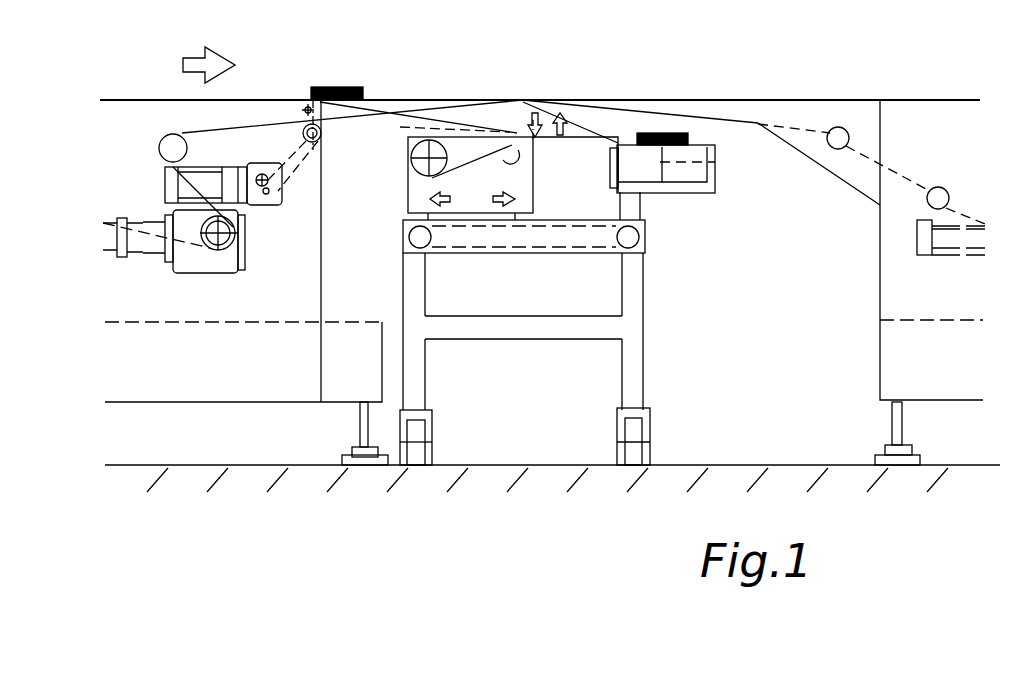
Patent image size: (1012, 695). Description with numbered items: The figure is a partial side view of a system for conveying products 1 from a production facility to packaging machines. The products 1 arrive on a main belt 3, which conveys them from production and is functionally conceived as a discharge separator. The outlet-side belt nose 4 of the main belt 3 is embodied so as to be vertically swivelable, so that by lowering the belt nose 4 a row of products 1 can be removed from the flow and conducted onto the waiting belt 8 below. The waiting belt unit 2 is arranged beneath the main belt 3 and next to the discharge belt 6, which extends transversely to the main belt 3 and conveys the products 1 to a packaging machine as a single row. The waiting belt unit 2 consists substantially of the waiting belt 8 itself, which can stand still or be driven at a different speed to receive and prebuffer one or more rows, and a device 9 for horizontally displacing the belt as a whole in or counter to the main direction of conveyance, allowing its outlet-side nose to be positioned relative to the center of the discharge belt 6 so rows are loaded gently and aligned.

The products 1 is at (335, 87).
The waiting belt unit 2 is at (647, 290).
The main belt 3 is at (243, 99).
The belt nose 4 is at (420, 105).
The discharge belt 6 is at (722, 187).
The waiting belt 8 is at (573, 139).
The device for horizontally displacing the belt 9 is at (463, 238).